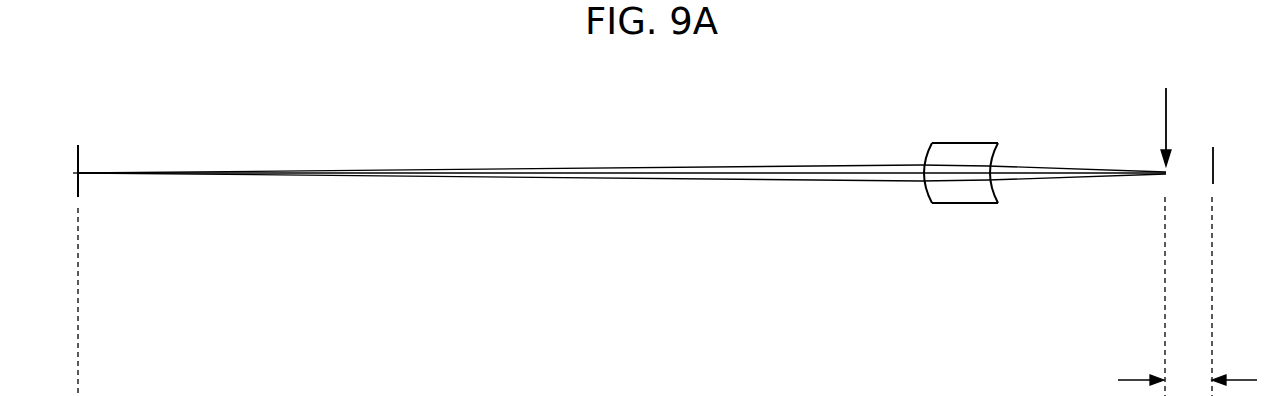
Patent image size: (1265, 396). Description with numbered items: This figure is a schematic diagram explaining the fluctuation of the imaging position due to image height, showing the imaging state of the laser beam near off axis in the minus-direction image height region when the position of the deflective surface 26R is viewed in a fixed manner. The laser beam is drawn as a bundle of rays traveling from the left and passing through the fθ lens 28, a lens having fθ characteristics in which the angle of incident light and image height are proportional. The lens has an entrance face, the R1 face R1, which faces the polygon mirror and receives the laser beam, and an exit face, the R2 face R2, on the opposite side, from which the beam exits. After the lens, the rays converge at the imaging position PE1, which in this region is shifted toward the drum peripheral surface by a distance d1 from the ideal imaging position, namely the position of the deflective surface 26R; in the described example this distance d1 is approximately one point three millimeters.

The fθ lens 28 is at (970, 128).
The R2 face R2 is at (930, 150).
The R1 face R1 is at (995, 157).
The imaging position PE1 is at (1162, 227).
The deflective surface 26R is at (1212, 168).
The distance d1 is at (1187, 378).